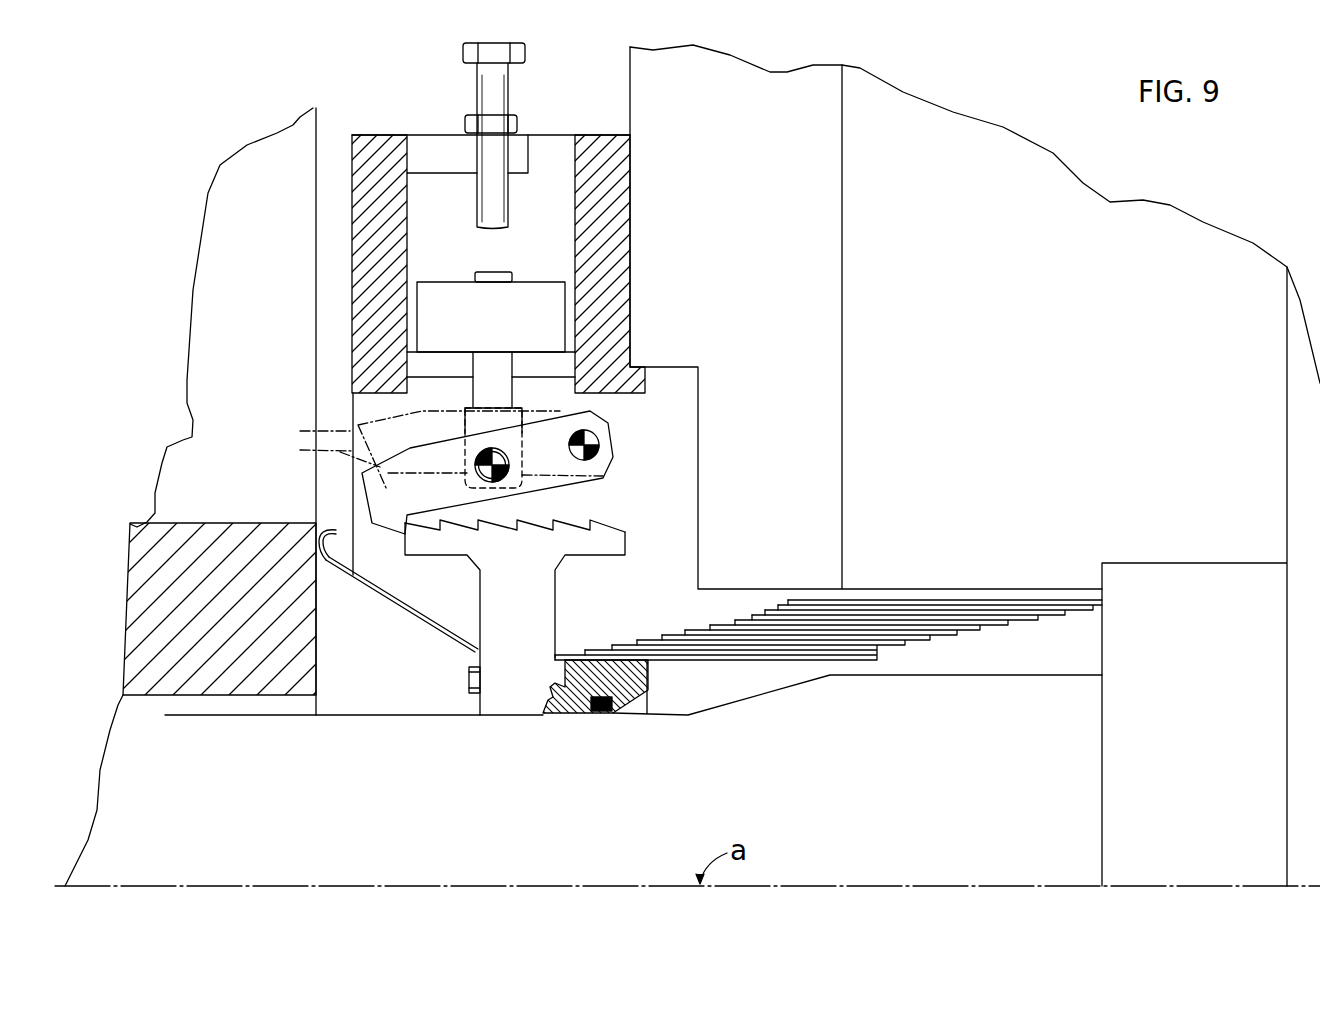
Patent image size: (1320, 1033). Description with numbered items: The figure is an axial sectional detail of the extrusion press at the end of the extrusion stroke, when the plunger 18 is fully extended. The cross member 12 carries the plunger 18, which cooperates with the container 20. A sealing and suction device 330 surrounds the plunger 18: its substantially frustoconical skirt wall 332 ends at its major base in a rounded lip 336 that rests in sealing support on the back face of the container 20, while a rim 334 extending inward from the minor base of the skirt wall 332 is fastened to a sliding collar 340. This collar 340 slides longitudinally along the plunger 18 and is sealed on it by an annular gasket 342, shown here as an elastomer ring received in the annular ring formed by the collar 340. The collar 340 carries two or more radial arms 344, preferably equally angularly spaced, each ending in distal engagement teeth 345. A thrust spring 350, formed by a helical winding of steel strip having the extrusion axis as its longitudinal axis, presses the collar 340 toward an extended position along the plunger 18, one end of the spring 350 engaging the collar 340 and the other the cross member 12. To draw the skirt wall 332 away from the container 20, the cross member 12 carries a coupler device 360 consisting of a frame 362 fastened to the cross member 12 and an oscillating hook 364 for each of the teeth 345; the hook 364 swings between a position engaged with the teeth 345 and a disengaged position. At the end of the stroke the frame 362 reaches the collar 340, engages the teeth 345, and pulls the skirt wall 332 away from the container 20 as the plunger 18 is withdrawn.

The cross member 12 is at (1200, 731).
The plunger 18 is at (913, 796).
The container 20 is at (230, 652).
The sealing and suction device 330 is at (374, 645).
The skirt wall 332 is at (410, 607).
The rim 334 is at (473, 662).
The rounded lip 336 is at (323, 547).
The sliding collar 340 is at (567, 715).
The annular gasket 342 is at (598, 712).
The radial arms 344 is at (527, 590).
The engagement teeth 345 is at (527, 533).
The thrust spring 350 is at (888, 627).
The coupler device 360 is at (641, 318).
The frame 362 is at (608, 232).
The oscillating hook 364 is at (410, 483).